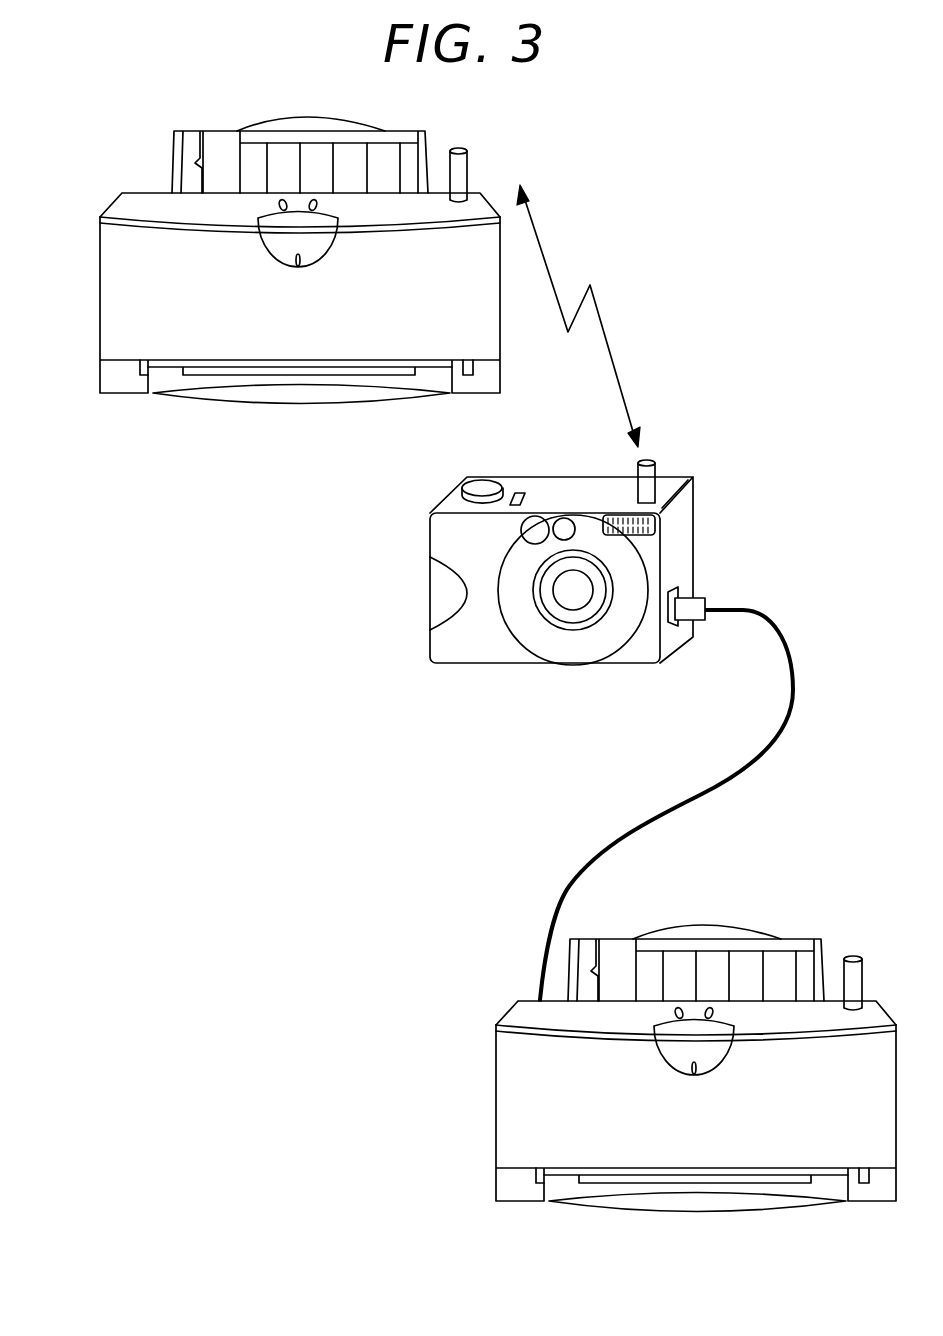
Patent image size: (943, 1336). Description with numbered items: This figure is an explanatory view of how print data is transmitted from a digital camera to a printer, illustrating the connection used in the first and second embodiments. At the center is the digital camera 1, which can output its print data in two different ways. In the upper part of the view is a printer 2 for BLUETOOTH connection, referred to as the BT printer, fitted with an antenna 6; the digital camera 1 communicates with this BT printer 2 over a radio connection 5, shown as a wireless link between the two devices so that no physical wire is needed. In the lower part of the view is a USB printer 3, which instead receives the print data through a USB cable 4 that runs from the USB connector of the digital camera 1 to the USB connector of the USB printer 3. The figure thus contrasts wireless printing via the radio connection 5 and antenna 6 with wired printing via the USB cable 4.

The digital camera 1 is at (435, 537).
The printer for BLUETOOTH connection (BT printer) 2 is at (279, 260).
The USB printer 3 is at (507, 1090).
The USB cable 4 is at (790, 646).
The radio connection 5 is at (610, 343).
The antenna 6 is at (473, 163).